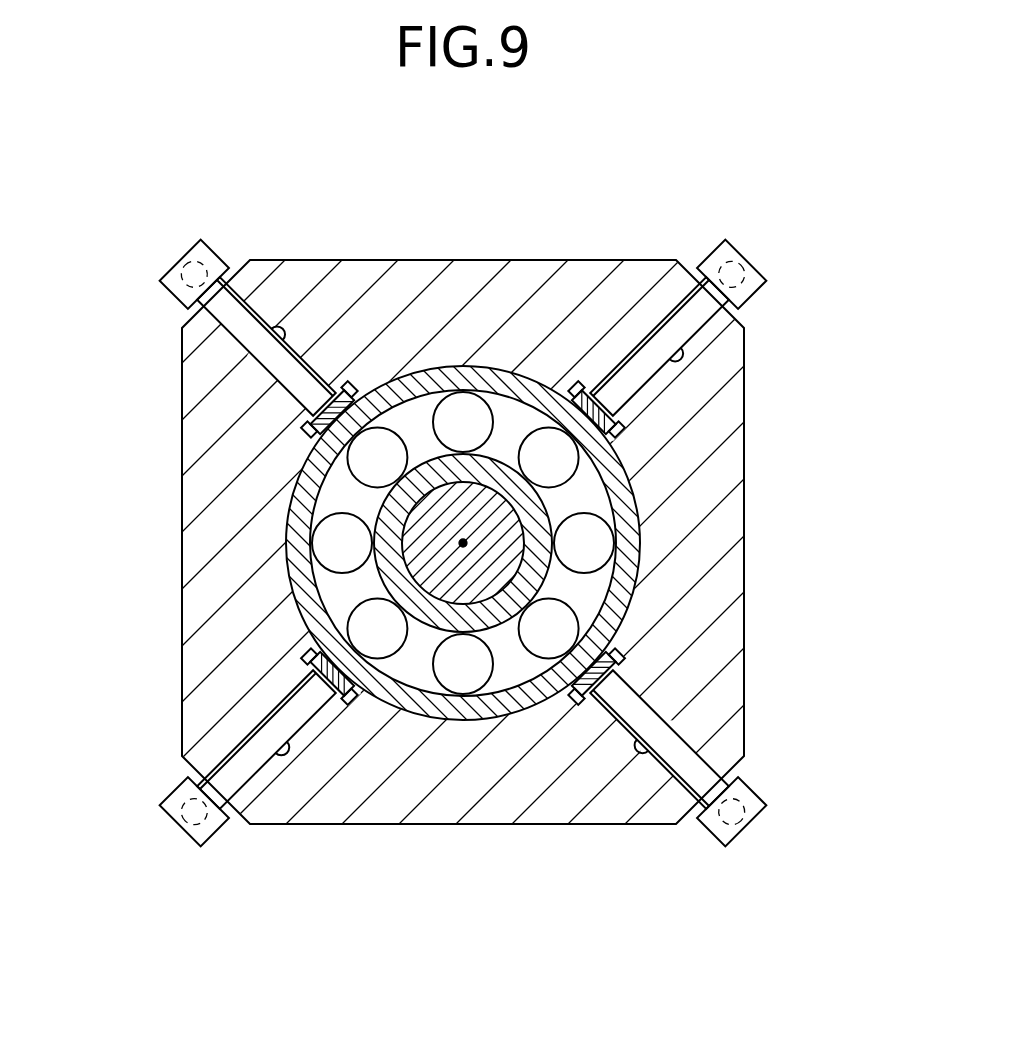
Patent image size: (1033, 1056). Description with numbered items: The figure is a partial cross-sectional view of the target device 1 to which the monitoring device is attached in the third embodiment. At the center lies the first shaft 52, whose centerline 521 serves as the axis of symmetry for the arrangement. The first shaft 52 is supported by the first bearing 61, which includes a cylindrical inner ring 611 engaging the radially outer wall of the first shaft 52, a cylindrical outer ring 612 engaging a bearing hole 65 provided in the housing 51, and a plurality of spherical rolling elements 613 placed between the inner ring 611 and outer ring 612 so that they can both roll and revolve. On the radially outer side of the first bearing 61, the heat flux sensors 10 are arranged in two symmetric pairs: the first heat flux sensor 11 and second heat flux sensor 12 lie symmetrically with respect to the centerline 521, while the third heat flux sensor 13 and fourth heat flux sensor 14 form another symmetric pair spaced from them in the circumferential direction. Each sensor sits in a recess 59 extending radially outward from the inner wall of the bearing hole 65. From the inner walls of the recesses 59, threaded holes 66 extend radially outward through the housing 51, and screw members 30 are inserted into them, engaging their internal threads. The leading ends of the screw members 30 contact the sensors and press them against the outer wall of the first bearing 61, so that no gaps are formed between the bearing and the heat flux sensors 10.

The rotary machine / bearing device 1 is at (658, 158).
The heat flux sensors 10 is at (460, 542).
The first heat flux sensor 11 is at (320, 428).
The second heat flux sensor 12 is at (617, 642).
The third heat flux sensor 13 is at (630, 452).
The fourth heat flux sensor 14 is at (353, 690).
The screw member 30 is at (243, 317).
The housing 51 is at (203, 372).
The first shaft 52 is at (497, 513).
The centerline 521 is at (467, 545).
The recess 59 is at (367, 395).
The first bearing 61 is at (85, 519).
The inner ring 611 is at (300, 517).
The outer ring 612 is at (337, 555).
The rolling elements 613 is at (305, 562).
The bearing hole 65 is at (290, 497).
The threaded hole 66 is at (285, 330).